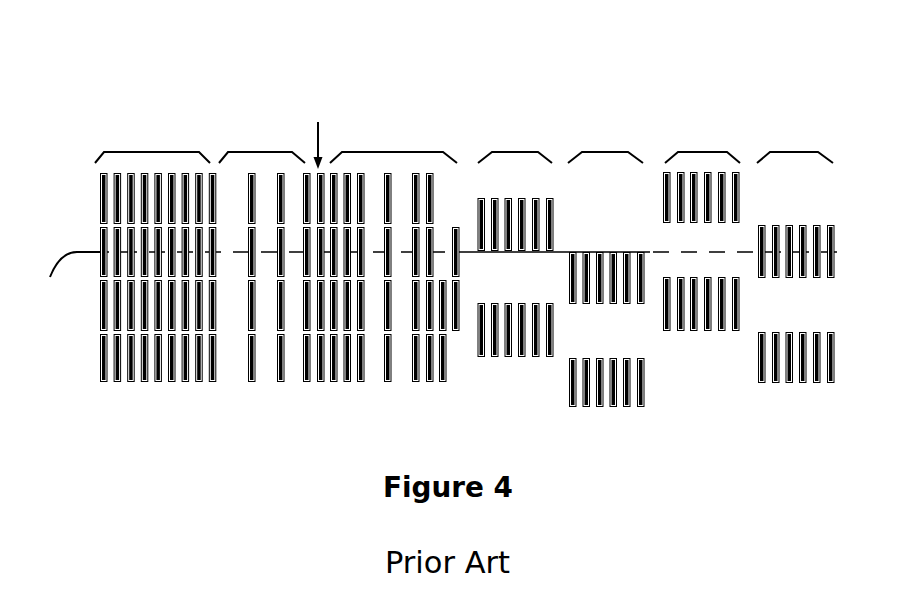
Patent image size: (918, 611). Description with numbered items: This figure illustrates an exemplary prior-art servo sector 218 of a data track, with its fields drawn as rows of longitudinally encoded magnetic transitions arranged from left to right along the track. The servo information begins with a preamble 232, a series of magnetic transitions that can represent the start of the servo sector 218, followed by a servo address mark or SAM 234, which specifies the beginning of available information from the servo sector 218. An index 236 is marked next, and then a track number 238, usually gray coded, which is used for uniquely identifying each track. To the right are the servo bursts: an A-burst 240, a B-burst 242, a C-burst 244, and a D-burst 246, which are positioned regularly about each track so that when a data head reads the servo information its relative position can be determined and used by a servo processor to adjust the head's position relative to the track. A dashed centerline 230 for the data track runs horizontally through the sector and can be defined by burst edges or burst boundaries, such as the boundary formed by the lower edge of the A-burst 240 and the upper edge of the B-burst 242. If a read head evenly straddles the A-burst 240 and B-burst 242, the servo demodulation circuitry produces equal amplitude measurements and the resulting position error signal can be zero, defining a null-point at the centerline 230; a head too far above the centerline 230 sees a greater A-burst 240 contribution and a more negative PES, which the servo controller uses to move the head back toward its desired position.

The servo sector 218 is at (186, 472).
The centerline 230 is at (434, 279).
The preamble 232 is at (157, 97).
The servo address mark 234 is at (233, 97).
The index 236 is at (325, 97).
The track number 238 is at (403, 97).
The A-burst 240 is at (539, 97).
The B-burst 242 is at (630, 97).
The C-burst 244 is at (722, 97).
The D-burst 246 is at (813, 97).